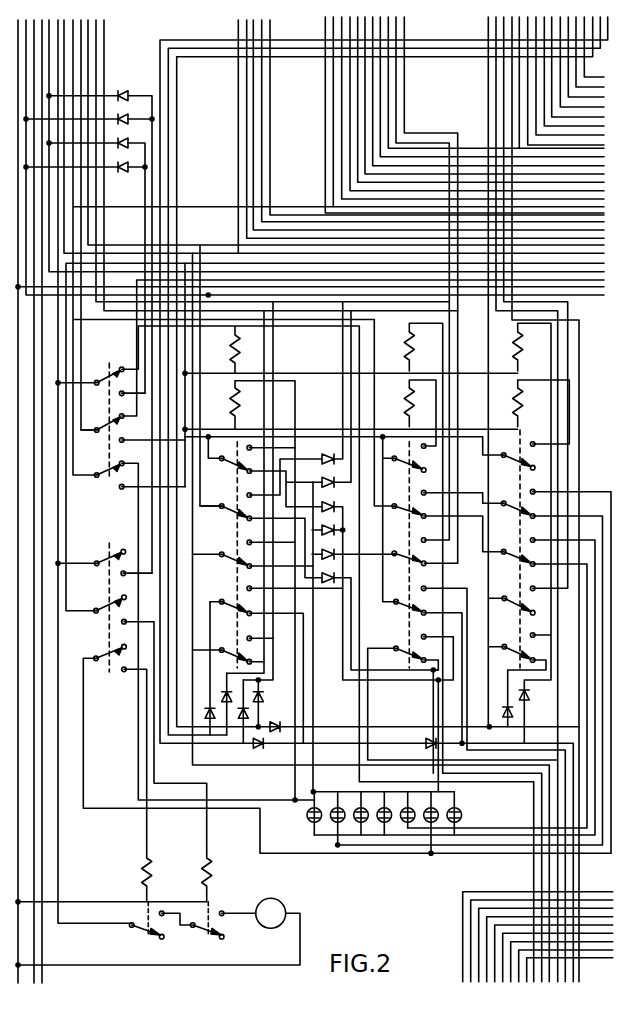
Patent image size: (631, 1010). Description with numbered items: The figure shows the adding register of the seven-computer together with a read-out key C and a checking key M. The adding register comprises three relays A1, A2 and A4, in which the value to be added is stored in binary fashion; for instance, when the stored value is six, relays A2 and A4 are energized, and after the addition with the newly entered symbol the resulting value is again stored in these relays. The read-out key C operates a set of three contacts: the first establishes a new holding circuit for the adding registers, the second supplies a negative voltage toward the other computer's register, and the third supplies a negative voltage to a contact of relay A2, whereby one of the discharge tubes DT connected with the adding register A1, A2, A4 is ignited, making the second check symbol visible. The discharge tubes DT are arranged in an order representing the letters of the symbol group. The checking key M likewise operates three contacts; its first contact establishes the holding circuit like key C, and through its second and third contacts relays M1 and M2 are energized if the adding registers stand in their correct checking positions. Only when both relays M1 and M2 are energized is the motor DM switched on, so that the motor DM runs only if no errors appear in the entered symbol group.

The read-out key C is at (184, 563).
The checking key M is at (333, 683).
The relay A1 is at (335, 642).
The relay A2 is at (467, 651).
The relay A4 is at (462, 588).
The relay M1 is at (133, 877).
The relay M2 is at (194, 877).
The motor DM is at (164, 924).
The discharge tubes DT is at (400, 823).